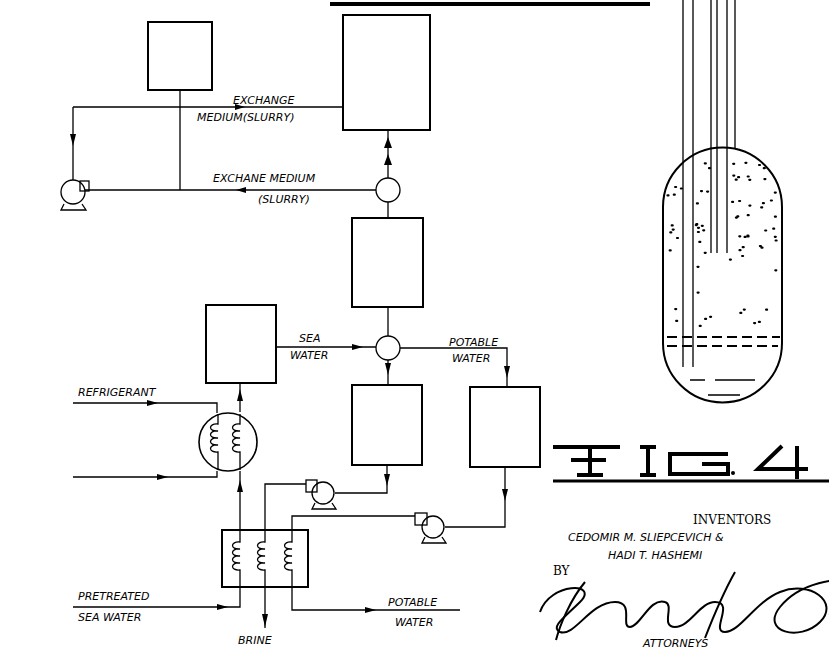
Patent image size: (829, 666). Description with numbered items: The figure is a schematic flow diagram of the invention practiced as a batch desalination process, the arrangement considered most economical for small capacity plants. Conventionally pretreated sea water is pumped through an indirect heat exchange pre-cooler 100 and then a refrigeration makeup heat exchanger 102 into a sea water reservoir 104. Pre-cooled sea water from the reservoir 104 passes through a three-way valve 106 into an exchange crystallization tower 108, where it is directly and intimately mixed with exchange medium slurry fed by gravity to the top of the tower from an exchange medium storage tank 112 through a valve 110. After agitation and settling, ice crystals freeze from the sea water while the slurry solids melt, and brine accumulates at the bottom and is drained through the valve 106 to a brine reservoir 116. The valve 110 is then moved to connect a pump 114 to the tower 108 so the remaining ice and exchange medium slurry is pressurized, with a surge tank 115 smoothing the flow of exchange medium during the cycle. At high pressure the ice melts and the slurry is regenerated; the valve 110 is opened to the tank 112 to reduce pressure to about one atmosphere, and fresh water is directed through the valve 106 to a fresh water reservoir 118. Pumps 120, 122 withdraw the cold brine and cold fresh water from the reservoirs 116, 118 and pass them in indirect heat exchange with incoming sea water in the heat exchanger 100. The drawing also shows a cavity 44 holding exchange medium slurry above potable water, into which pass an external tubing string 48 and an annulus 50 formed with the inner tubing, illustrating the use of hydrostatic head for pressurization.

The cavity 44 is at (760, 205).
The external tubing string 48 is at (736, 12).
The annulus 50 is at (728, 52).
The indirect heat exchange pre-cooler 100 is at (303, 556).
The refrigeration makeup heat exchanger 102 is at (257, 440).
The sea water reservoir 104 is at (250, 350).
The three-way valve 106 is at (396, 342).
The exchange crystallization tower 108 is at (398, 269).
The valve 110 is at (396, 184).
The exchange medium storage tank 112 is at (399, 70).
The pump 114 is at (78, 196).
The surge tank 115 is at (190, 54).
The brine reservoir 116 is at (398, 427).
The fresh water reservoir 118 is at (516, 429).
The pump 120 is at (331, 486).
The pump 122 is at (441, 520).